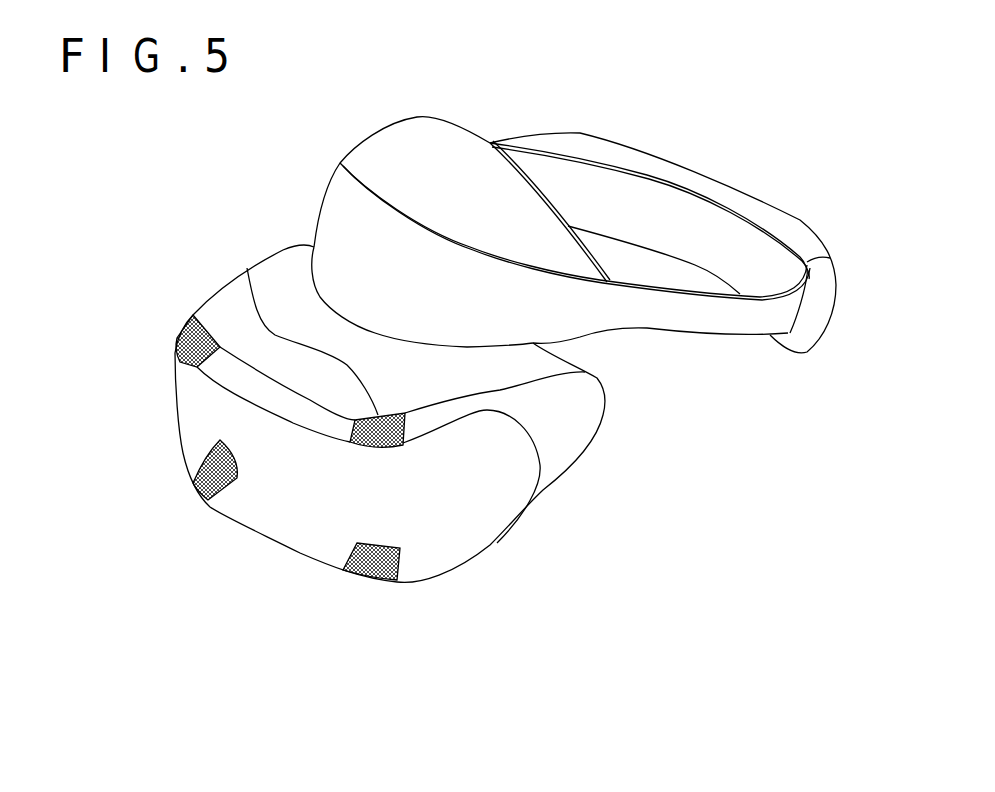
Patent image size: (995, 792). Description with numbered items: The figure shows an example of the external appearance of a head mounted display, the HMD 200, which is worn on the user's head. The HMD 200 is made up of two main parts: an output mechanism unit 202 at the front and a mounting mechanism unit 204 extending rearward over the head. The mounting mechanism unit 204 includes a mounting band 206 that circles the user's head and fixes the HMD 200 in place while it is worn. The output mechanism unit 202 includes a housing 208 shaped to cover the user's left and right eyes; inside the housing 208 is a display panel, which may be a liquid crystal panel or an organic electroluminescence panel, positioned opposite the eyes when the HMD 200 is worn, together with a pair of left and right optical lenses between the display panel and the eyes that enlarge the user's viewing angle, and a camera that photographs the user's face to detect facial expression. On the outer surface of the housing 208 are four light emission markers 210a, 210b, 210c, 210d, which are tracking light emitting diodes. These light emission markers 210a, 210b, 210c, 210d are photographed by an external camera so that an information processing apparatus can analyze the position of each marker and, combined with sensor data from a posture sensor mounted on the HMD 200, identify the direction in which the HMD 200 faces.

The head mounted display 200 is at (462, 704).
The output mechanism unit 202 is at (158, 375).
The mounting mechanism unit 204 is at (742, 172).
The mounting band 206 is at (697, 333).
The housing 208 is at (487, 547).
The light emission marker 210a is at (193, 315).
The light emission marker 210b is at (247, 268).
The light emission marker 210c is at (210, 498).
The light emission marker 210d is at (364, 580).